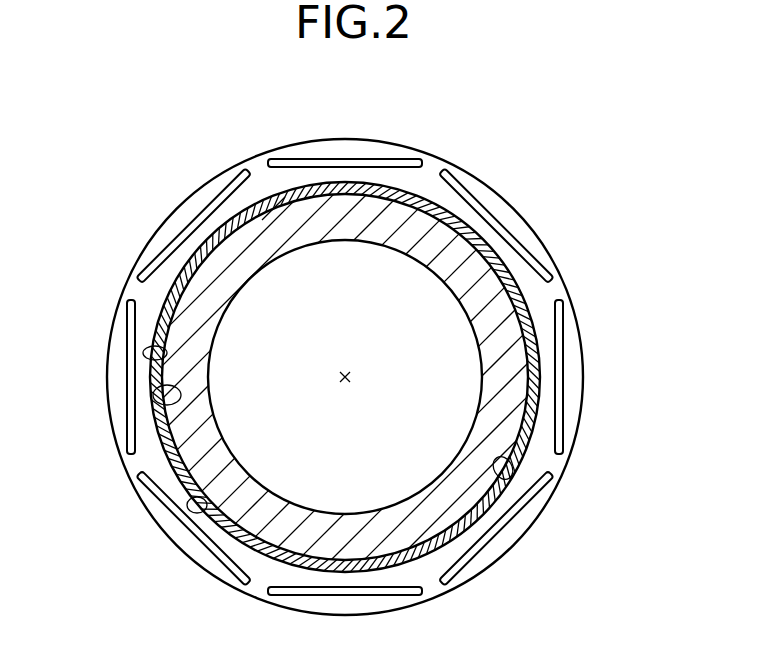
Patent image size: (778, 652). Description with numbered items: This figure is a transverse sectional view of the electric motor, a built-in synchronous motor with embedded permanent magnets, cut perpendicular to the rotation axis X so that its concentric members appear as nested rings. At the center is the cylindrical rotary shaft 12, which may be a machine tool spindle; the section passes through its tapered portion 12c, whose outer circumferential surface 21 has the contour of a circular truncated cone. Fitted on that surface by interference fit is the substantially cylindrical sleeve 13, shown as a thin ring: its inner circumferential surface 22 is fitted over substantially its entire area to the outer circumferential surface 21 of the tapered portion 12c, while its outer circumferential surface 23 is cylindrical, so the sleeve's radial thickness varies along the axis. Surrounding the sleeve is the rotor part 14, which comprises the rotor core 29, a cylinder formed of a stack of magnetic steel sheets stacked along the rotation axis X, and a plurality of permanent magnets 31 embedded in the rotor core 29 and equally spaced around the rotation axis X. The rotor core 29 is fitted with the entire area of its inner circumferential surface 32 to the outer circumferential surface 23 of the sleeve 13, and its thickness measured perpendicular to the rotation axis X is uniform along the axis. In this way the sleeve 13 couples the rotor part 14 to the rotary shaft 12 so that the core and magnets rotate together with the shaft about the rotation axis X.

The rotary shaft 12 is at (415, 200).
The tapered portion 12c is at (272, 223).
The sleeve 13 is at (530, 303).
The rotor part 14 is at (398, 372).
The outer circumferential surface of the tapered portion 21 is at (146, 353).
The inner circumferential surface of the sleeve 22 is at (165, 400).
The outer circumferential surface of the sleeve 23 is at (196, 507).
The rotor core 29 is at (583, 342).
The permanent magnets 31 is at (517, 235).
The inner circumferential surface of the rotor core 32 is at (507, 488).
The rotation axis X is at (350, 373).